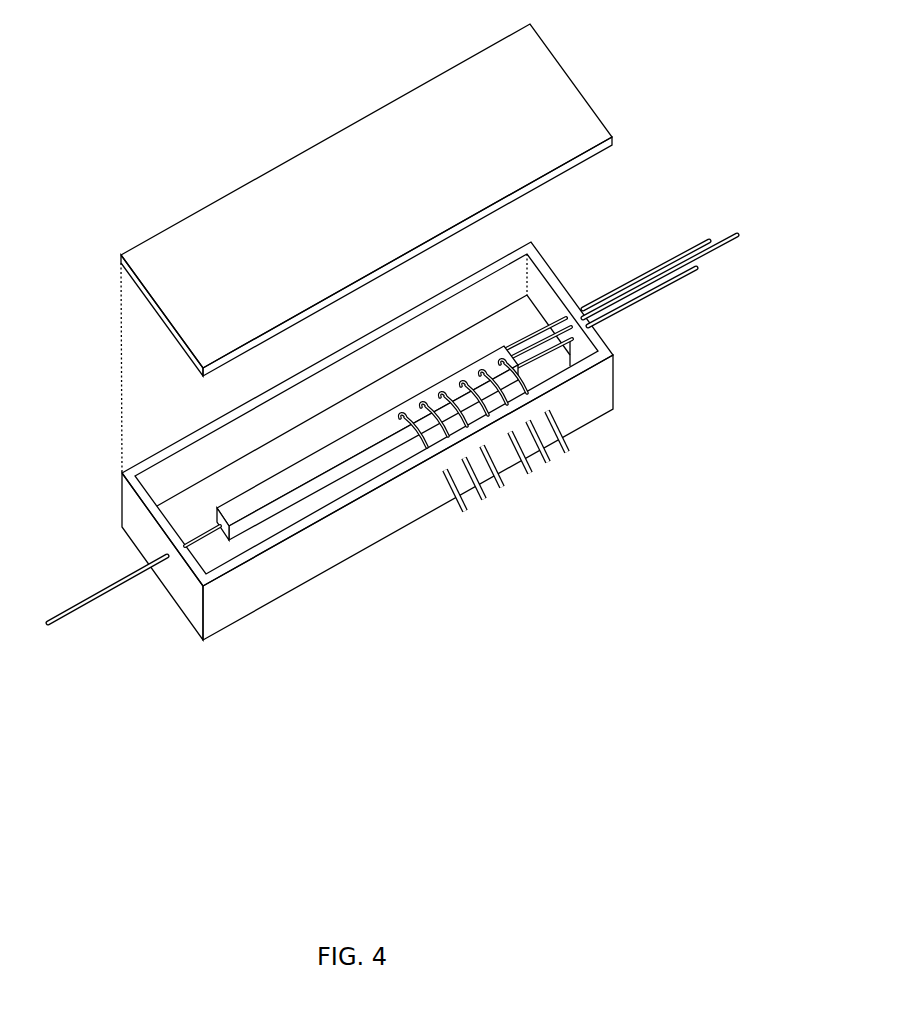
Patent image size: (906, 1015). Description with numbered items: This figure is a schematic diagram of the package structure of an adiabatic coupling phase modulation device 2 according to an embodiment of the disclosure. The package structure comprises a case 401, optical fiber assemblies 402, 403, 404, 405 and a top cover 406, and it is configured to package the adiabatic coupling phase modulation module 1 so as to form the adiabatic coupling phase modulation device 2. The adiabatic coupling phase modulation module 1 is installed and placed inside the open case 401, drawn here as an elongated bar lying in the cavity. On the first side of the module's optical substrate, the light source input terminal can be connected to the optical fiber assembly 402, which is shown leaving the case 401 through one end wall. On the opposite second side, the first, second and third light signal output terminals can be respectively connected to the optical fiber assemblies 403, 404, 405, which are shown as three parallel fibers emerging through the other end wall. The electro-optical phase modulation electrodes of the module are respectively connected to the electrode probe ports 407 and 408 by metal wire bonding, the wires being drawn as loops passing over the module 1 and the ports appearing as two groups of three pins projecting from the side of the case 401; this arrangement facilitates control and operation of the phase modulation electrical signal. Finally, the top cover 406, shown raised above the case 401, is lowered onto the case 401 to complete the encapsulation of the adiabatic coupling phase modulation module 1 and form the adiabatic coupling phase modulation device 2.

The adiabatic coupling phase modulation module 1 is at (415, 436).
The adiabatic coupling phase modulation device 2 is at (415, 377).
The case 401 is at (235, 605).
The optical fiber assembly 402 is at (58, 621).
The optical fiber assembly 403 is at (695, 270).
The optical fiber assembly 404 is at (723, 232).
The optical fiber assembly 405 is at (707, 233).
The top cover 406 is at (263, 195).
The electrode probe port 407 is at (512, 487).
The electrode probe port 408 is at (575, 453).